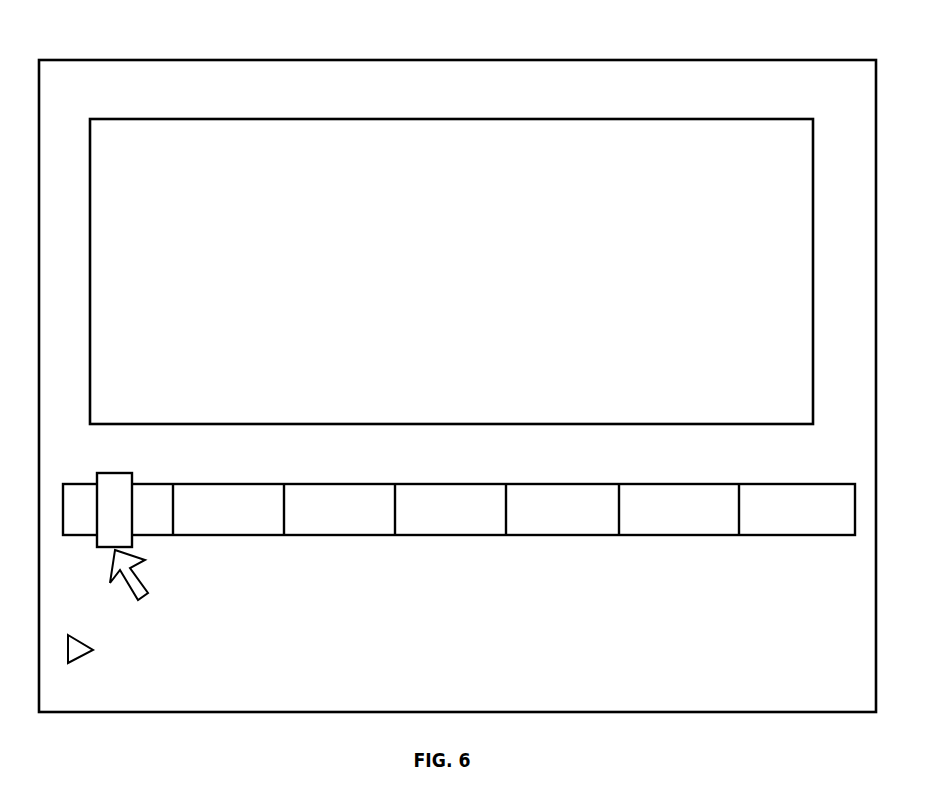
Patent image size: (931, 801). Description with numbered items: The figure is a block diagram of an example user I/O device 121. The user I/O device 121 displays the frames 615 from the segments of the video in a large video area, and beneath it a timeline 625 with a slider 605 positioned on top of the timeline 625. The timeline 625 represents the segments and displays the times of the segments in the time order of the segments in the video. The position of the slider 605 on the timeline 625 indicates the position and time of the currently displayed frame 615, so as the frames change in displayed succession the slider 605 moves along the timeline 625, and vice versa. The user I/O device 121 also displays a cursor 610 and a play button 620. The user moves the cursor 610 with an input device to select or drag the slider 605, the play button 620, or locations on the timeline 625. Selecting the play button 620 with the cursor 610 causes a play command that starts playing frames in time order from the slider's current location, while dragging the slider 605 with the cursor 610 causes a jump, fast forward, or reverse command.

The user I/O device 121 is at (457, 60).
The slider 605 is at (97, 473).
The cursor 610 is at (140, 598).
The frames 615 is at (451, 424).
The play button 620 is at (68, 663).
The timeline 625 is at (857, 478).